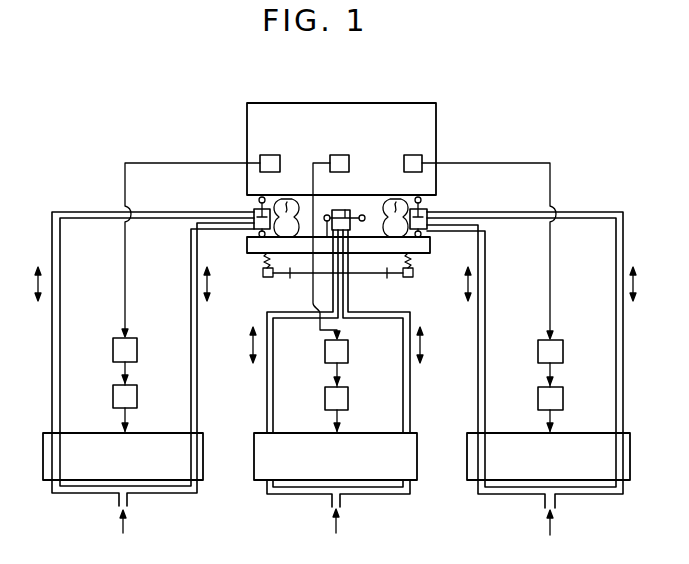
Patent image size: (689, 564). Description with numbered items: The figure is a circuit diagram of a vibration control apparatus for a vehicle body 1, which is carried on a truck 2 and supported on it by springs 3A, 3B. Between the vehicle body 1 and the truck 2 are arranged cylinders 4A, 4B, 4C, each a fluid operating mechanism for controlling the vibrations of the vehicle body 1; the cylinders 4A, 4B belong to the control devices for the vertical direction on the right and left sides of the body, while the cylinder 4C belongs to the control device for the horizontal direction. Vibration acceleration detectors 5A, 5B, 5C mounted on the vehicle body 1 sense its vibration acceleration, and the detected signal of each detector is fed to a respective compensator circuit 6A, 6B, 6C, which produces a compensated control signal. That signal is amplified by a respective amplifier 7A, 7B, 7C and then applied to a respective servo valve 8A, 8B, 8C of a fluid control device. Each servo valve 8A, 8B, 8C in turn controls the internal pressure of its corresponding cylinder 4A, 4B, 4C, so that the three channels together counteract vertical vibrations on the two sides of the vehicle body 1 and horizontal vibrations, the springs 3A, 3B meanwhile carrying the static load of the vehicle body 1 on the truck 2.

The vehicle body 1 is at (437, 113).
The truck 2 is at (430, 245).
The spring 3A is at (289, 197).
The spring 3B is at (399, 197).
The cylinder 4A is at (254, 210).
The cylinder 4B is at (427, 207).
The cylinder 4C is at (347, 210).
The vibration acceleration detector 5A is at (268, 155).
The vibration acceleration detector 5B is at (412, 155).
The vibration acceleration detector 5C is at (339, 155).
The compensator circuit 6A is at (130, 348).
The compensator circuit 6B is at (555, 350).
The compensator circuit 6C is at (343, 352).
The amplifier 7A is at (128, 400).
The amplifier 7B is at (555, 398).
The amplifier 7C is at (340, 398).
The servo valve 8A is at (163, 470).
The servo valve 8B is at (585, 472).
The servo valve 8C is at (375, 472).